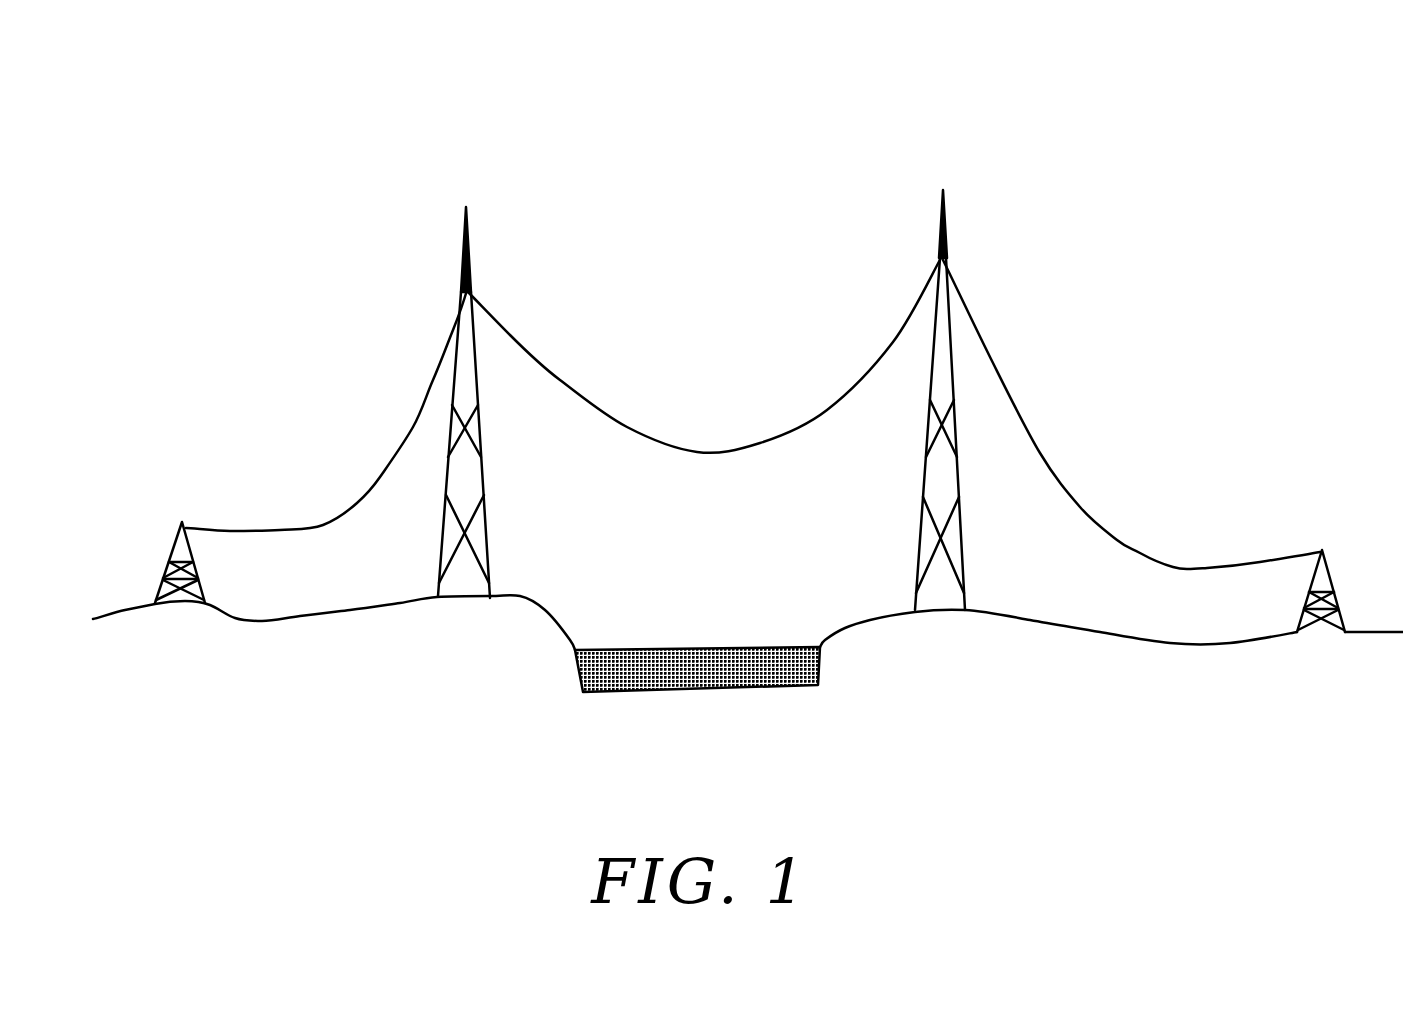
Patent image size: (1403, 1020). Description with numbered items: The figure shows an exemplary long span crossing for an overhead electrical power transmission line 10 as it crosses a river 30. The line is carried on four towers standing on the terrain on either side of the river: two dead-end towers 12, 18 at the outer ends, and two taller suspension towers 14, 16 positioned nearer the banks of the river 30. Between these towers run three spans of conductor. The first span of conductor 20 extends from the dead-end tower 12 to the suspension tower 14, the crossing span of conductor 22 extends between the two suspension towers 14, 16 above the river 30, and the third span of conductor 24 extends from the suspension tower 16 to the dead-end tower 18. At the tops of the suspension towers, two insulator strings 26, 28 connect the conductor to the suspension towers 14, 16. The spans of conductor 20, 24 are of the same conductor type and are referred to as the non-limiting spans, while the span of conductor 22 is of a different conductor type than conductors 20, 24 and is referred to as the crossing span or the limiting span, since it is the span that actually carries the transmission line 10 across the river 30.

The overhead power transmission line 10 is at (1104, 106).
The dead-end tower 12 is at (193, 537).
The suspension tower 14 is at (452, 388).
The suspension tower 16 is at (951, 358).
The dead-end tower 18 is at (1328, 566).
The conductor 20 is at (357, 500).
The conductor 22 is at (707, 452).
The conductor 24 is at (1138, 553).
The insulator string 26 is at (470, 233).
The insulator string 28 is at (933, 230).
The river 30 is at (695, 693).